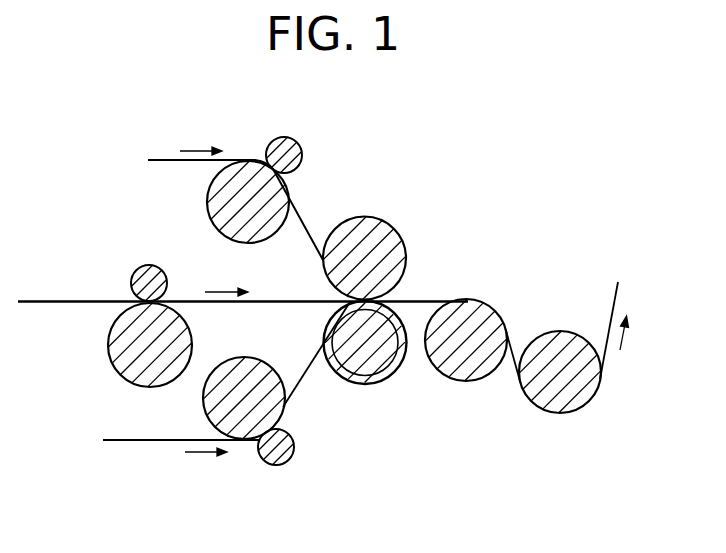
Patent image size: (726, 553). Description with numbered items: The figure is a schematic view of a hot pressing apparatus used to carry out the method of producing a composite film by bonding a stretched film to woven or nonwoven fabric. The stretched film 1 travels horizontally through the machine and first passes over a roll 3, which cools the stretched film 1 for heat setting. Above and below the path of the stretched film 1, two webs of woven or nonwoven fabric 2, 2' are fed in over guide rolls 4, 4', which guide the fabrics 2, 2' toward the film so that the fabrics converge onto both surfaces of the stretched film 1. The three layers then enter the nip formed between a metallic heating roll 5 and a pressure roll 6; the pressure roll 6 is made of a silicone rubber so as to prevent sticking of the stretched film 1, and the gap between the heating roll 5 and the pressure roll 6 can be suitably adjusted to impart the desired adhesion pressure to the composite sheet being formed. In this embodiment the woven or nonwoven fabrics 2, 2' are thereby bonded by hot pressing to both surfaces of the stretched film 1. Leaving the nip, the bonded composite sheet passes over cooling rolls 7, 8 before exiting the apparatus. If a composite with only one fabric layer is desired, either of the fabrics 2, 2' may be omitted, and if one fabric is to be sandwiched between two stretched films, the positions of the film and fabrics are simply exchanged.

The stretched film 1 is at (67, 293).
The woven or nonwoven fabric 2 is at (230, 180).
The woven or nonwoven fabric 2' is at (226, 404).
The roll 3 is at (100, 337).
The guide roll 4 is at (222, 202).
The guide roll 4' is at (211, 398).
The metallic heating roll 5 is at (357, 376).
The pressure roll 6 is at (398, 248).
The cooling roll 7 is at (456, 373).
The cooling roll 8 is at (552, 323).